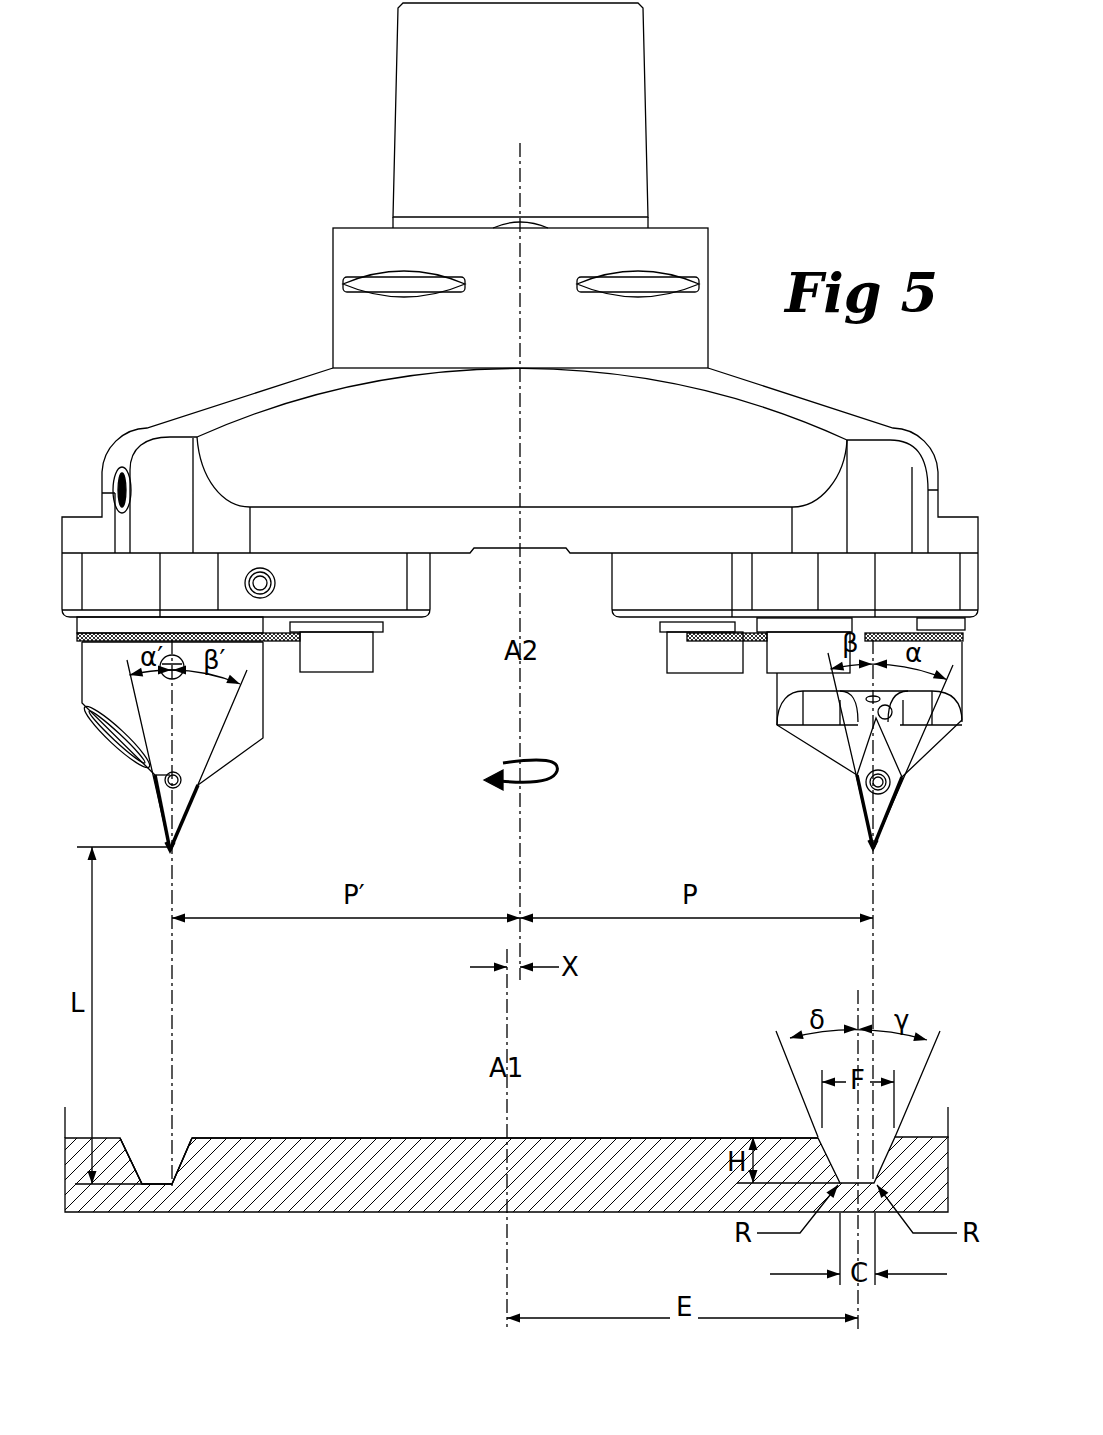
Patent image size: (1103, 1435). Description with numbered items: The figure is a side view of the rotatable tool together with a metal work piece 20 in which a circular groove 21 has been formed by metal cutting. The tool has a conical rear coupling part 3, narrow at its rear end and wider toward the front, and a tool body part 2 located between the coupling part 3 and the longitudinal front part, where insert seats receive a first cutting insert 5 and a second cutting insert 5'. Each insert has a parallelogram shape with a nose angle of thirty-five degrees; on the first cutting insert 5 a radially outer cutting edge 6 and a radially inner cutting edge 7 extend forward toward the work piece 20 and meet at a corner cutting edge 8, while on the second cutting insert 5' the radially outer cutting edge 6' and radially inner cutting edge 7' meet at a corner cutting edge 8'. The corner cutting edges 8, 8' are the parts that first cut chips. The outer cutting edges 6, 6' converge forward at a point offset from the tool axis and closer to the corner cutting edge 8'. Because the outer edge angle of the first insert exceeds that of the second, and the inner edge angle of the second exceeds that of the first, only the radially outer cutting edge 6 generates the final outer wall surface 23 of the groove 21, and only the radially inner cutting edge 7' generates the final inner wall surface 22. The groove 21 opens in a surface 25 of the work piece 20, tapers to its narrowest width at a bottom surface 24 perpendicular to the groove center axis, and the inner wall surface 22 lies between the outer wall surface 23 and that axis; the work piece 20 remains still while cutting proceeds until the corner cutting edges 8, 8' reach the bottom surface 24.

The tool body part 2 is at (290, 443).
The coupling part 3 is at (618, 110).
The first cutting insert 5 is at (886, 796).
The radially outer cutting edge 6 is at (905, 812).
The radially inner cutting edge 7 is at (845, 811).
The corner cutting edge 8 is at (903, 857).
The second cutting insert 5' is at (169, 819).
The radially outer cutting edge 6' is at (130, 812).
The radially inner cutting edge 7' is at (210, 817).
The corner cutting edge 8' is at (203, 861).
The metal work piece 20 is at (405, 1180).
The circular groove 21 is at (148, 1170).
The inner wall surface 22 is at (185, 1150).
The outer wall surface 23 is at (133, 1148).
The bottom surface 24 is at (163, 1178).
The surface of the work piece 25 is at (378, 1135).